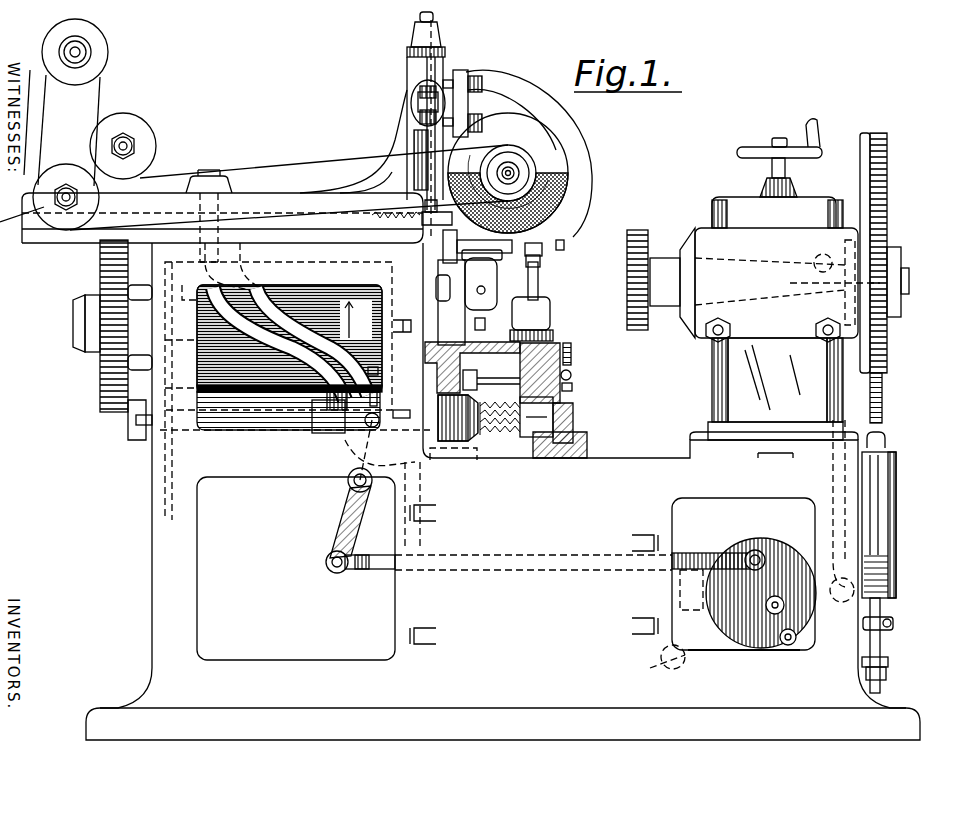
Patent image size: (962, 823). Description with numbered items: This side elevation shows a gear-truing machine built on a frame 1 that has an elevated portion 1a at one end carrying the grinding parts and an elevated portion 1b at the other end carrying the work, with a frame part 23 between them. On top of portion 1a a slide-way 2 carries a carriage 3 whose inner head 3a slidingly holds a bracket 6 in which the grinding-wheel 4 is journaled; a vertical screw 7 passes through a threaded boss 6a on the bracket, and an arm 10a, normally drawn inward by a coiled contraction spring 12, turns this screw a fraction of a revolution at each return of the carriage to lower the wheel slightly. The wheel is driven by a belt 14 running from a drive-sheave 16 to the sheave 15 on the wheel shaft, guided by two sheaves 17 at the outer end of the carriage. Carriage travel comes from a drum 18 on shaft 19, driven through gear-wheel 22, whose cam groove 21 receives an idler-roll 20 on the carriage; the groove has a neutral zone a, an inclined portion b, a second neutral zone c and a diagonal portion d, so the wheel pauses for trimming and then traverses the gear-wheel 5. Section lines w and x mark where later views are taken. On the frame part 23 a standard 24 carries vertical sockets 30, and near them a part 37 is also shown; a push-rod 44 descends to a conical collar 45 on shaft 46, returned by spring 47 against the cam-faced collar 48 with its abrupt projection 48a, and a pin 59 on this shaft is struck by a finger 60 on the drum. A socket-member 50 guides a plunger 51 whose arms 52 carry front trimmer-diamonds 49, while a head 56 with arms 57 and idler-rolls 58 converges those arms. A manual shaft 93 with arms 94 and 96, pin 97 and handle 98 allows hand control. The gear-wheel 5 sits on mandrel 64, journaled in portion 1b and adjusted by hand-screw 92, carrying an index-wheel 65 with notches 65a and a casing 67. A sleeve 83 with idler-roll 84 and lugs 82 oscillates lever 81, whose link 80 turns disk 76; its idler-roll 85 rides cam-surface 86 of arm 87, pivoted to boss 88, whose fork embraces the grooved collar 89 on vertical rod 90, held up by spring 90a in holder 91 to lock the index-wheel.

The frame 1 is at (503, 491).
The elevated portion of frame 1a is at (295, 386).
The elevated portion of frame 1b is at (780, 318).
The slide-way 2 is at (75, 235).
The carriage 3 is at (280, 206).
The head 3a is at (406, 72).
The grinding-wheel 4 is at (545, 215).
The gear-wheel 5 is at (637, 266).
The bracket 6 is at (460, 98).
The boss 6a is at (432, 98).
The screw 7 is at (436, 22).
The arm 10a is at (410, 272).
The coiled contraction spring 12 is at (375, 216).
The belt 14 is at (242, 167).
The sheave 15 is at (520, 160).
The drive-sheave 16 is at (95, 51).
The sheave 17 is at (140, 140).
The drum 18 is at (358, 320).
The shaft 19 is at (73, 325).
The idler-roll 20 is at (225, 262).
The cam groove 21 is at (300, 375).
The gear-wheel 22 is at (100, 370).
The frame part 23 is at (578, 440).
The standard or bracket 24 is at (440, 312).
The vertical socket 30 is at (483, 283).
The pin 37 is at (460, 238).
The push-rod 44 is at (438, 373).
The collar 45 is at (480, 360).
The shaft 46 is at (302, 430).
The coiled compression-spring 47 is at (501, 449).
The cam-faced collar 48 is at (553, 412).
The abrupt projection 48a is at (572, 388).
The front trimmer-diamonds 49 is at (562, 242).
The socket-member 50 is at (555, 333).
The plunger or push-rod 51 is at (572, 352).
The arms 52 is at (543, 248).
The collar or head 56 is at (552, 306).
The arms 57 is at (540, 282).
The idler-roll 58 is at (541, 262).
The pin 59 is at (380, 398).
The finger 60 is at (380, 368).
The arbor-shaft or mandrel 64 is at (672, 316).
The index-wheel or disk 65 is at (884, 230).
The peripheral notches 65a is at (884, 382).
The housing or casing 67 is at (843, 169).
The disk 76 is at (780, 548).
The rod or link 80 is at (366, 570).
The lever 81 is at (340, 523).
The lugs 82 is at (368, 426).
The sleeve 83 is at (328, 433).
The idler-roll 84 is at (327, 402).
The idler-roll 85 is at (792, 646).
The cam-surface 86 is at (780, 652).
The arm 87 is at (694, 652).
The boss 88 is at (656, 667).
The grooved collar 89 is at (890, 668).
The vertical rod 90 is at (882, 630).
The spring 90a is at (885, 573).
The holder 91 is at (884, 528).
The hand-screw 92 is at (760, 150).
The shaft 93 is at (572, 375).
The arm 94 is at (488, 375).
The arm 96 is at (500, 411).
The pin 97 is at (530, 440).
The operating handle 98 is at (572, 345).
The neutral zone a is at (548, 210).
The inclined portion b is at (540, 220).
The second neutral zone c is at (186, 295).
The inclined portion d is at (300, 335).
The section line w is at (386, 445).
The section line x is at (568, 487).